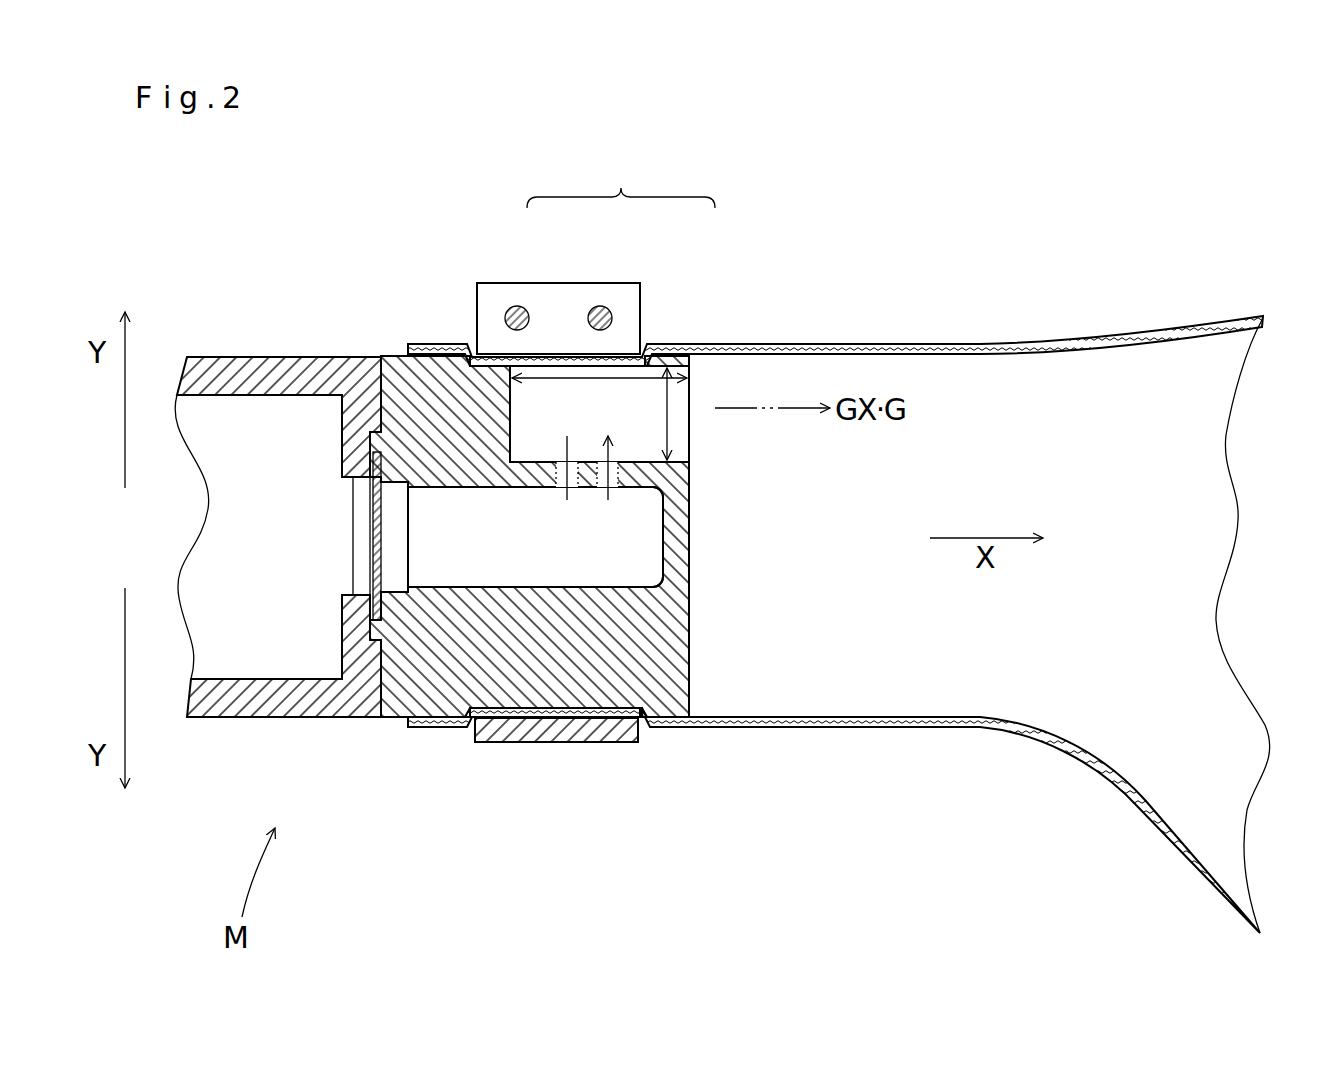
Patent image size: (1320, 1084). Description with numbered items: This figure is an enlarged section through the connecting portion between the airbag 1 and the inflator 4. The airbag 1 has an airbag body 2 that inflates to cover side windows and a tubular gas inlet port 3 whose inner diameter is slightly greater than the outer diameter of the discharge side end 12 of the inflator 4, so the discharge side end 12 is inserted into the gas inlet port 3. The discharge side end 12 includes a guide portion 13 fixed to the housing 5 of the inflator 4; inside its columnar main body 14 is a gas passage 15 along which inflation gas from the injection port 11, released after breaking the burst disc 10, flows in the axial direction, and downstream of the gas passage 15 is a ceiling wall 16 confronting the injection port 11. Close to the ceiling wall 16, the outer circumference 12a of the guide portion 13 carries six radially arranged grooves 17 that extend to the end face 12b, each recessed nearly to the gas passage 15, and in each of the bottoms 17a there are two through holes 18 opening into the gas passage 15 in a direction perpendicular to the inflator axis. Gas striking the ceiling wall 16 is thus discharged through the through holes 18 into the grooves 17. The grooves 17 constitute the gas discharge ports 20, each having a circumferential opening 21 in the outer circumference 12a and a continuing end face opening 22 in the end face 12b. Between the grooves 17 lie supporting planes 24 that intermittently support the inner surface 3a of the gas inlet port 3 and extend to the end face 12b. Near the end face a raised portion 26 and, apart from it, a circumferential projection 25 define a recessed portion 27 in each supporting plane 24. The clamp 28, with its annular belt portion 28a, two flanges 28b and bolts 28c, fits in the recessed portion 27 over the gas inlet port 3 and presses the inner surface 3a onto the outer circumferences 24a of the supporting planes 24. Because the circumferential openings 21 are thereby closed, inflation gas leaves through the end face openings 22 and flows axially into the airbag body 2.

The airbag 1 is at (1195, 596).
The airbag body 2 is at (1228, 353).
The gas inlet port 3 is at (797, 727).
The inner surface 3a is at (770, 358).
The inflator 4 is at (276, 595).
The housing 5 is at (213, 717).
The burst disc 10 is at (356, 490).
The injection port 11 is at (360, 530).
The discharge side end 12 is at (392, 723).
The outer circumference 12a is at (394, 356).
The end face 12b is at (689, 672).
The guide portion 13 is at (700, 622).
The columnar main body 14 is at (433, 690).
The gas passage 15 is at (655, 533).
The ceiling wall 16 is at (689, 500).
The grooves 17 is at (689, 482).
The bottoms 17a is at (514, 470).
The through holes 18 is at (608, 503).
The gas discharge ports 20 is at (613, 306).
The circumferential opening 21 is at (553, 377).
The end face opening 22 is at (689, 400).
The supporting plane 24 is at (614, 742).
The outer circumferences 24a is at (580, 721).
The projection 25 is at (443, 356).
The raised portion 26 is at (664, 720).
The recessed portion 27 is at (521, 712).
The clamp 28 is at (466, 287).
The belt portion 28a is at (633, 742).
The flanges 28b is at (487, 295).
The bolts 28c is at (515, 306).